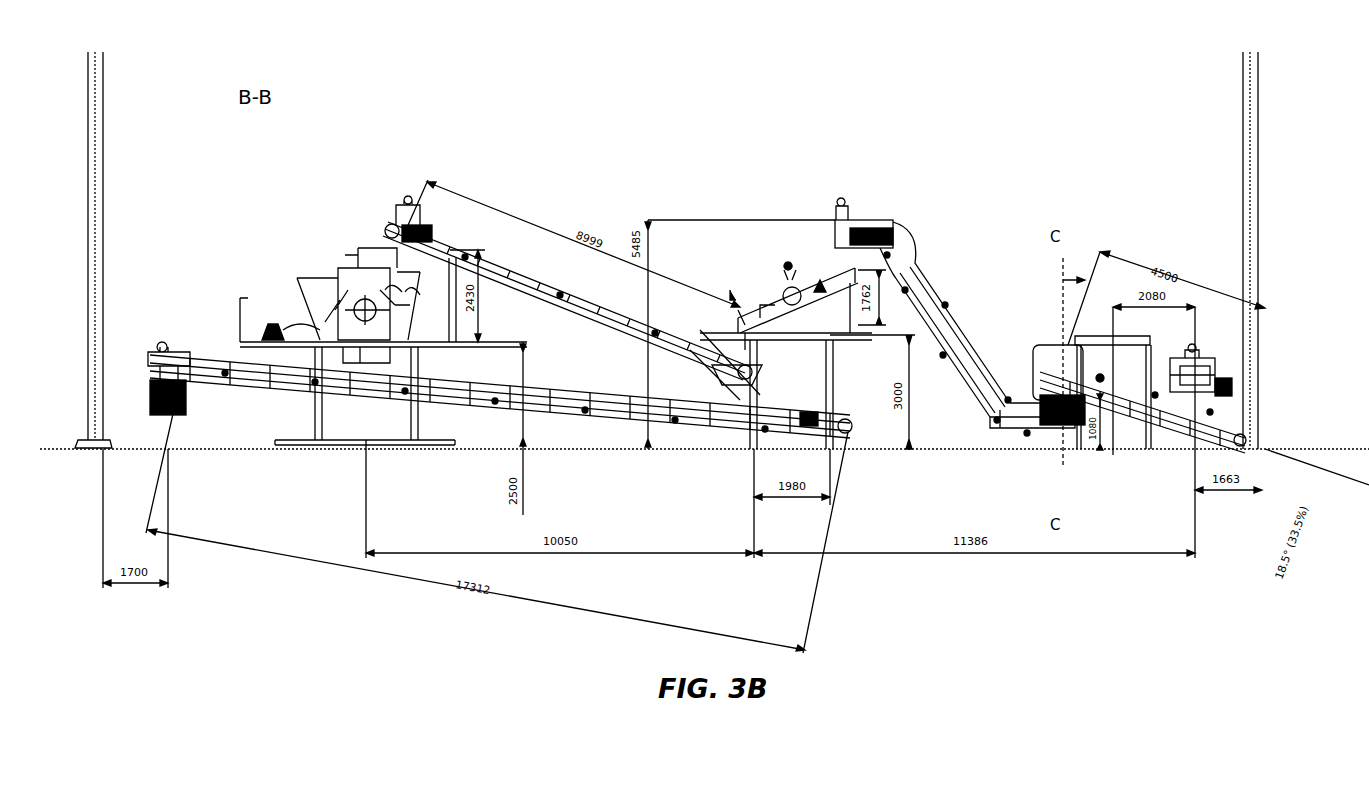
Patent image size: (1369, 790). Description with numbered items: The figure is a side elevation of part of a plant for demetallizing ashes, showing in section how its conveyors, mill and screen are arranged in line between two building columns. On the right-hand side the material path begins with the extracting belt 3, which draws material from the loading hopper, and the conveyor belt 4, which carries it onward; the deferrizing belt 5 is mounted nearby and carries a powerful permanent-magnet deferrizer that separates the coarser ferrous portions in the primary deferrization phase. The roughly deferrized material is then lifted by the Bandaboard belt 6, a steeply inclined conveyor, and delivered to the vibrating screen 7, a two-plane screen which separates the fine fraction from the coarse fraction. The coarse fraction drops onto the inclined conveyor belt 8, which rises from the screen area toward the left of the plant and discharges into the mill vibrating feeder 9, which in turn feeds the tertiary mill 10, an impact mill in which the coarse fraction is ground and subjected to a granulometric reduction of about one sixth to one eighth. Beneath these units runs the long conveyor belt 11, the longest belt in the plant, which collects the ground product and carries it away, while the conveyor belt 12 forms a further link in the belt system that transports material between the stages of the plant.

The extracting belt 3 is at (1222, 372).
The conveyor belt 4 is at (1237, 393).
The deferrizing belt 5 is at (1086, 370).
The Bandaboard belt 6 is at (940, 305).
The vibrating screen 7 is at (770, 297).
The conveyor belt 8 is at (527, 280).
The mill vibrating feeder 9 is at (383, 252).
The tertiary mill 10 is at (335, 290).
The conveyor belt 11 is at (220, 360).
The conveyor belt 12 is at (137, 367).